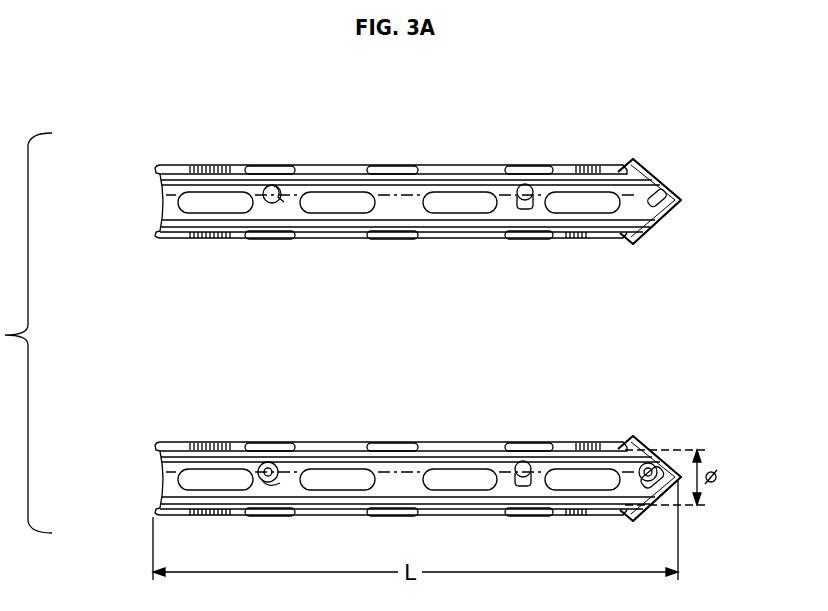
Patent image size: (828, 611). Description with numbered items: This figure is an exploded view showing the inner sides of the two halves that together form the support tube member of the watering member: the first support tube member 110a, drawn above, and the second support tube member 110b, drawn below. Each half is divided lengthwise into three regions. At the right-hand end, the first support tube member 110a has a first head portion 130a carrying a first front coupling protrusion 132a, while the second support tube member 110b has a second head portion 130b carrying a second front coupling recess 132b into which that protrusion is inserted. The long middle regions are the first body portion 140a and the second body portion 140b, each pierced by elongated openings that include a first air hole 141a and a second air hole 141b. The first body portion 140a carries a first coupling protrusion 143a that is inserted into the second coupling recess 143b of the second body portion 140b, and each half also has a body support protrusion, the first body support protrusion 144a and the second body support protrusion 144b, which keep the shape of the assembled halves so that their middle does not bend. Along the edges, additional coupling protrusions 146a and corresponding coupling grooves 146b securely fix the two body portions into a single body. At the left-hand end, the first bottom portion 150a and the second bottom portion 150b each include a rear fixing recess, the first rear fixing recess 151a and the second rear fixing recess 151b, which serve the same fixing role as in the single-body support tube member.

The first support tube member 110a is at (558, 165).
The second support tube member 110b is at (366, 463).
The first head portion 130a is at (644, 171).
The second head portion 130b is at (649, 478).
The first front coupling protrusion 132a is at (656, 208).
The second front coupling recess 132b is at (641, 515).
The first body portion 140a is at (358, 187).
The second body portion 140b is at (355, 451).
The first air hole 141a is at (217, 206).
The second air hole 141b is at (163, 488).
The first coupling protrusion 143a is at (280, 205).
The second coupling recess 143b is at (286, 509).
The first body support protrusion 144a is at (521, 208).
The second body support protrusion 144b is at (509, 509).
The additional coupling protrusions 146a is at (394, 168).
The coupling grooves 146b is at (412, 533).
The first bottom portion 150a is at (150, 183).
The second bottom portion 150b is at (364, 468).
The first rear fixing recess 151a is at (167, 250).
The second rear fixing recess 151b is at (178, 441).